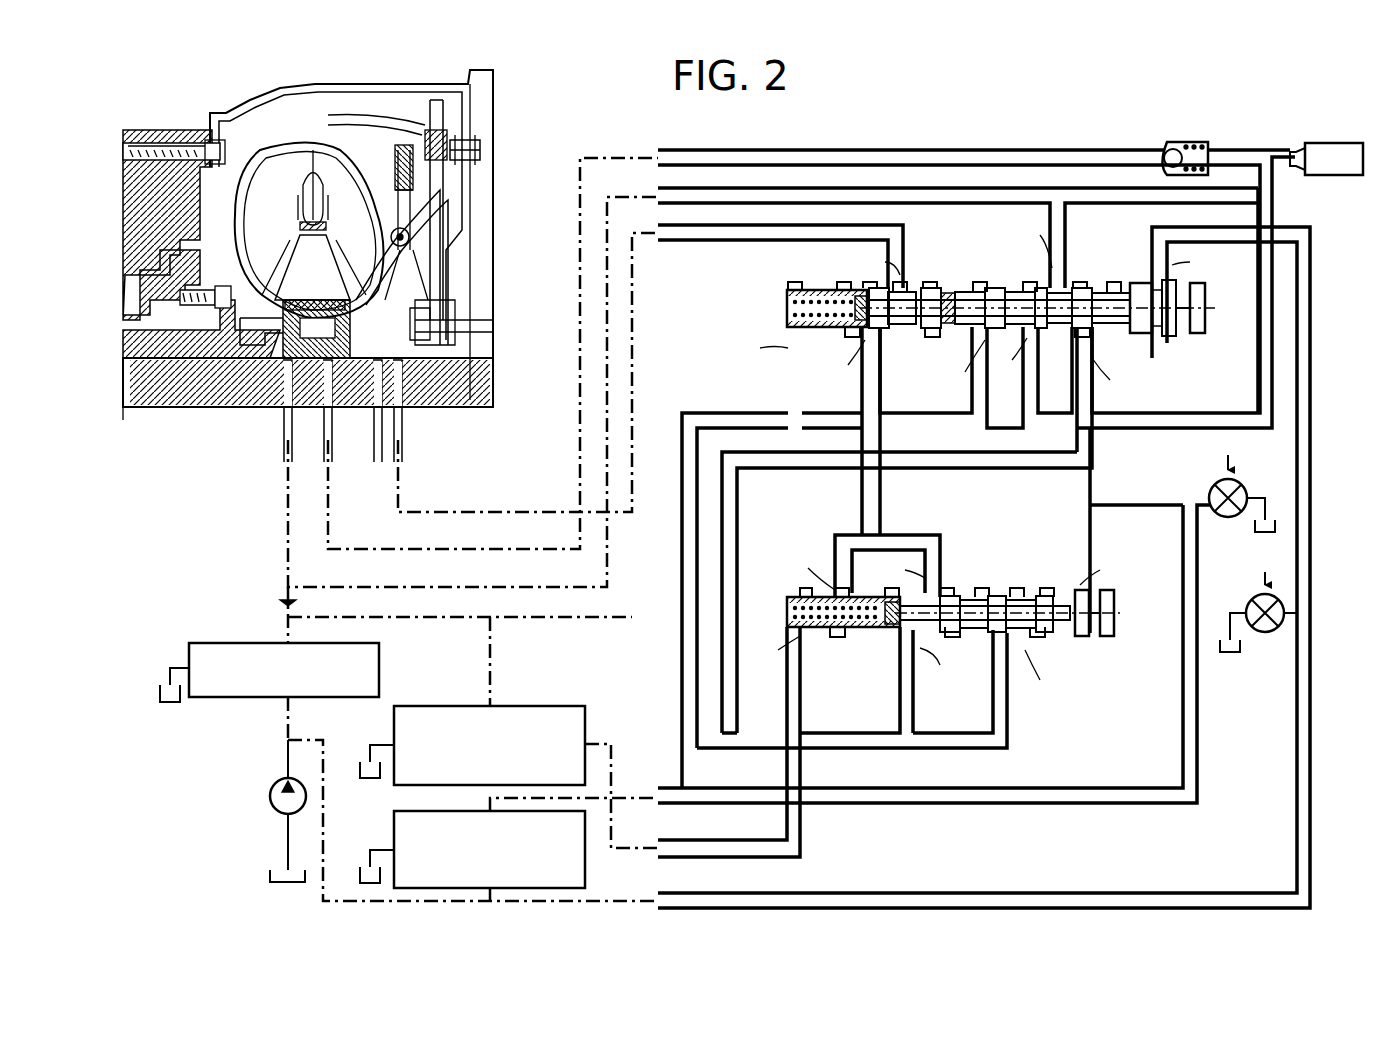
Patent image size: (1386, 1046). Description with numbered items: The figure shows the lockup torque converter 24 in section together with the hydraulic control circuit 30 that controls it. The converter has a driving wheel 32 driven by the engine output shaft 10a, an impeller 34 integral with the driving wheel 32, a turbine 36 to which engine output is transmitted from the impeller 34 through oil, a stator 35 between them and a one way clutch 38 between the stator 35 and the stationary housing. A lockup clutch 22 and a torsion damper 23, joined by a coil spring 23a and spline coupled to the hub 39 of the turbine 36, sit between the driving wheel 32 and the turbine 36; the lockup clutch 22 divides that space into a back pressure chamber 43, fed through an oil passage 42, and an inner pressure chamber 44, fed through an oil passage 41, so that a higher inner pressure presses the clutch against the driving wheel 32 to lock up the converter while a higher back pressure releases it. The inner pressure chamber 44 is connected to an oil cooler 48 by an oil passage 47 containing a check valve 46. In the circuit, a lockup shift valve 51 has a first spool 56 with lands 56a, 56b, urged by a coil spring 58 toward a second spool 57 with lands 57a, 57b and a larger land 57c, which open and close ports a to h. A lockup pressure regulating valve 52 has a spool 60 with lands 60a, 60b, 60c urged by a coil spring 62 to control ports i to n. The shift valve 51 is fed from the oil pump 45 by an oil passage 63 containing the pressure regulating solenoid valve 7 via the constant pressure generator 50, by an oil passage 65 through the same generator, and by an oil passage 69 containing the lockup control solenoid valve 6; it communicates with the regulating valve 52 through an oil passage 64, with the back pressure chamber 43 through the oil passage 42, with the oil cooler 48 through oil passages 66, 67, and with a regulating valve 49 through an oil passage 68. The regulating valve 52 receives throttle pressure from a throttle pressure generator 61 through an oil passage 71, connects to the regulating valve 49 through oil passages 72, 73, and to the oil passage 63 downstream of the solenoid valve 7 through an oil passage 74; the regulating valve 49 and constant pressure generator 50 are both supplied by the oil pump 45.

The lockup control solenoid valve 6 is at (1266, 632).
The pressure regulating solenoid valve 7 is at (1243, 486).
The engine output shaft 10a is at (470, 400).
The lockup clutch 22 is at (448, 128).
The torsion damper 23 is at (420, 210).
The coil spring 23a is at (410, 237).
The lockup torque converter 24 is at (362, 62).
The hydraulic control circuit 30 is at (976, 132).
The driving wheel 32 is at (395, 115).
The impeller 34 is at (278, 130).
The stator 35 is at (295, 262).
The turbine 36 is at (313, 148).
The one way clutch 38 is at (285, 412).
The hub 39 is at (360, 420).
The oil passage 41 is at (275, 574).
The oil passage 42 is at (490, 512).
The back pressure chamber 43 is at (428, 283).
The inner pressure chamber 44 is at (365, 150).
The oil pump 45 is at (268, 800).
The check valve 46 is at (1200, 140).
The oil passage 47 is at (340, 549).
The oil cooler 48 is at (1328, 143).
The regulating valve 49 is at (380, 670).
The constant pressure generator 50 is at (394, 850).
The lockup shift valve 51 is at (970, 305).
The lockup pressure regulating valve 52 is at (944, 614).
The first spool 56 is at (925, 338).
The land 56a is at (858, 288).
The land 56b is at (932, 288).
The second spool 57 is at (1083, 338).
The land 57a is at (1015, 292).
The land 57b is at (1082, 288).
The land 57c is at (1138, 283).
The coil spring 58 is at (792, 318).
The spool 60 is at (962, 596).
The land 60a is at (888, 630).
The land 60b is at (950, 634).
The land 60c is at (1022, 598).
The throttle pressure generator 61 is at (560, 706).
The coil spring 62 is at (800, 600).
The oil passage 63 is at (780, 398).
The oil passage 64 is at (880, 396).
The oil passage 65 is at (702, 413).
The oil passage 66 is at (1105, 190).
The oil passage 67 is at (1020, 410).
The oil passage 68 is at (1075, 462).
The oil passage 69 is at (1312, 306).
The oil passage 71 is at (800, 690).
The oil passage 72 is at (900, 714).
The oil passage 73 is at (1010, 705).
The oil passage 74 is at (1090, 528).